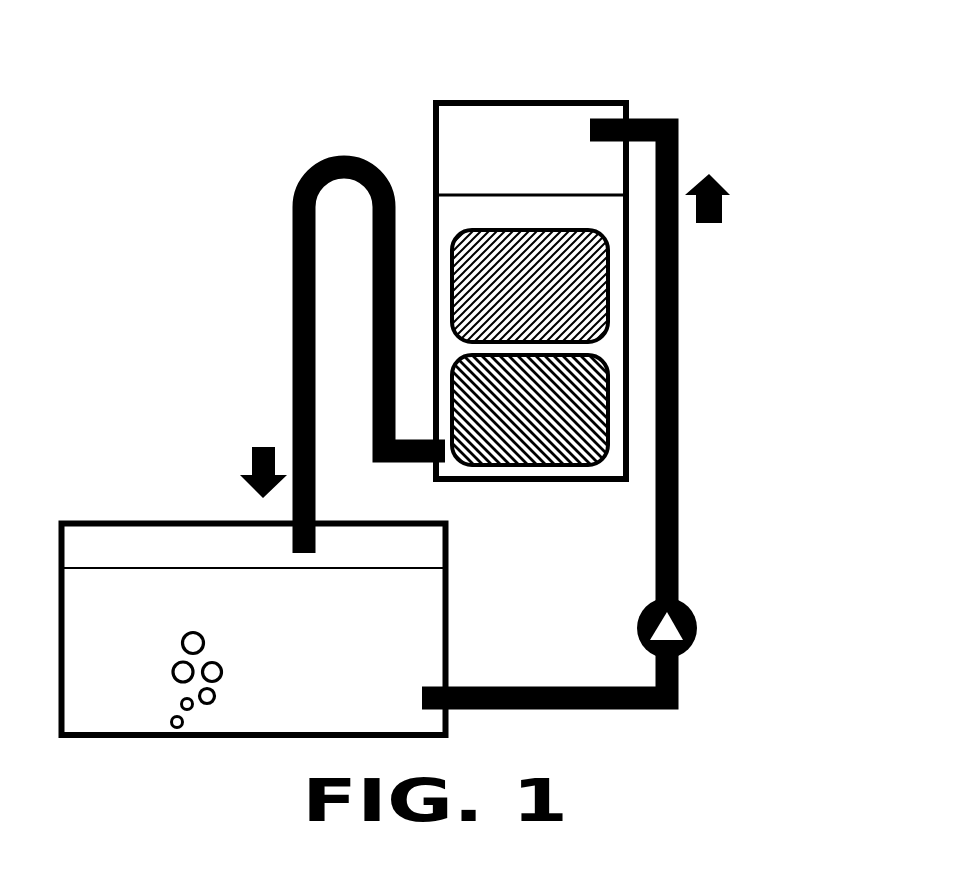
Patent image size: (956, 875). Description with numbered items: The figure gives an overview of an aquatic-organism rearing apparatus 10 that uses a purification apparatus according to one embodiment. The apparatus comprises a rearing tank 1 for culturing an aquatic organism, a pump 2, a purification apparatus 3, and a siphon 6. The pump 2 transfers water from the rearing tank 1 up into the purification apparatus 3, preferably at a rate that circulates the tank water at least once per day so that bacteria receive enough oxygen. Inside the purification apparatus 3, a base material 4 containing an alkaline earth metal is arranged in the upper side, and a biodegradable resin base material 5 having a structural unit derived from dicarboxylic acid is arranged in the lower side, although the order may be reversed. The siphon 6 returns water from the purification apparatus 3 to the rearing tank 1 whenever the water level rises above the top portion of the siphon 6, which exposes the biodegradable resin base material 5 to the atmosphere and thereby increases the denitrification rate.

The aquatic-organism rearing apparatus 10 is at (178, 77).
The rearing tank 1 is at (143, 520).
The pump 2 is at (698, 634).
The purification apparatus 3 is at (590, 100).
The base material containing an alkaline earth metal 4 is at (605, 323).
The biodegradable resin base material 5 is at (605, 440).
The siphon 6 is at (293, 265).